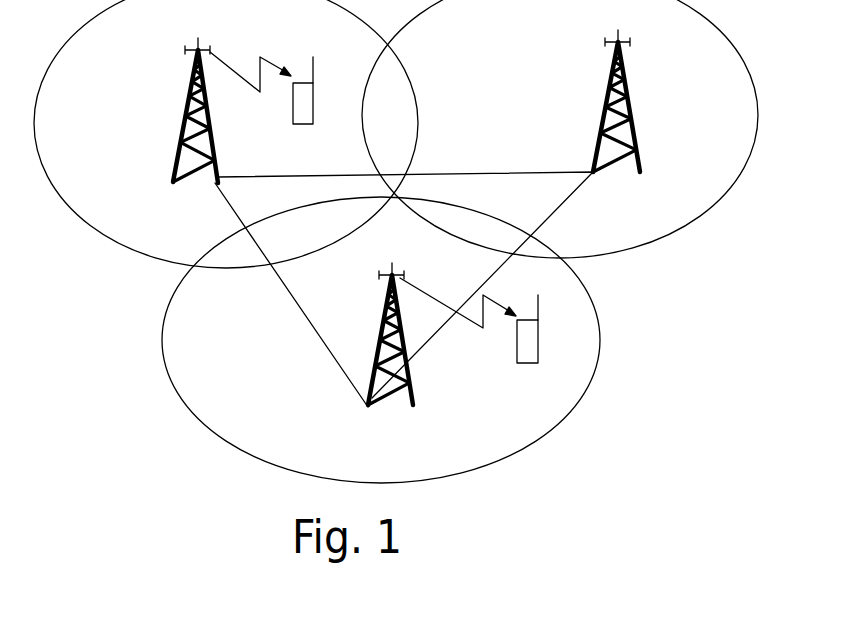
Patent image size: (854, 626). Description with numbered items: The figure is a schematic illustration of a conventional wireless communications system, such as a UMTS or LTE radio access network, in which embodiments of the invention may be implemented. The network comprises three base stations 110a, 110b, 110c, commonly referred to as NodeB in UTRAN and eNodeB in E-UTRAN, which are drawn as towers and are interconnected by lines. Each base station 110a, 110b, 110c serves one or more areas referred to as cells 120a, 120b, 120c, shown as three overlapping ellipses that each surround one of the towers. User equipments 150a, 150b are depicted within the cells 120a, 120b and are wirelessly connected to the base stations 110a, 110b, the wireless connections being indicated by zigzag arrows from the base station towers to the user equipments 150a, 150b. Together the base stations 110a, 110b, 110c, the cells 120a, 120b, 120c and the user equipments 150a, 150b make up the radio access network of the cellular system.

The base station 110a is at (172, 160).
The base station 110b is at (380, 411).
The base station 110c is at (637, 163).
The cell 120a is at (138, 70).
The cell 120b is at (282, 431).
The cell 120c is at (740, 82).
The user equipment 150a is at (292, 124).
The user equipment 150b is at (517, 364).